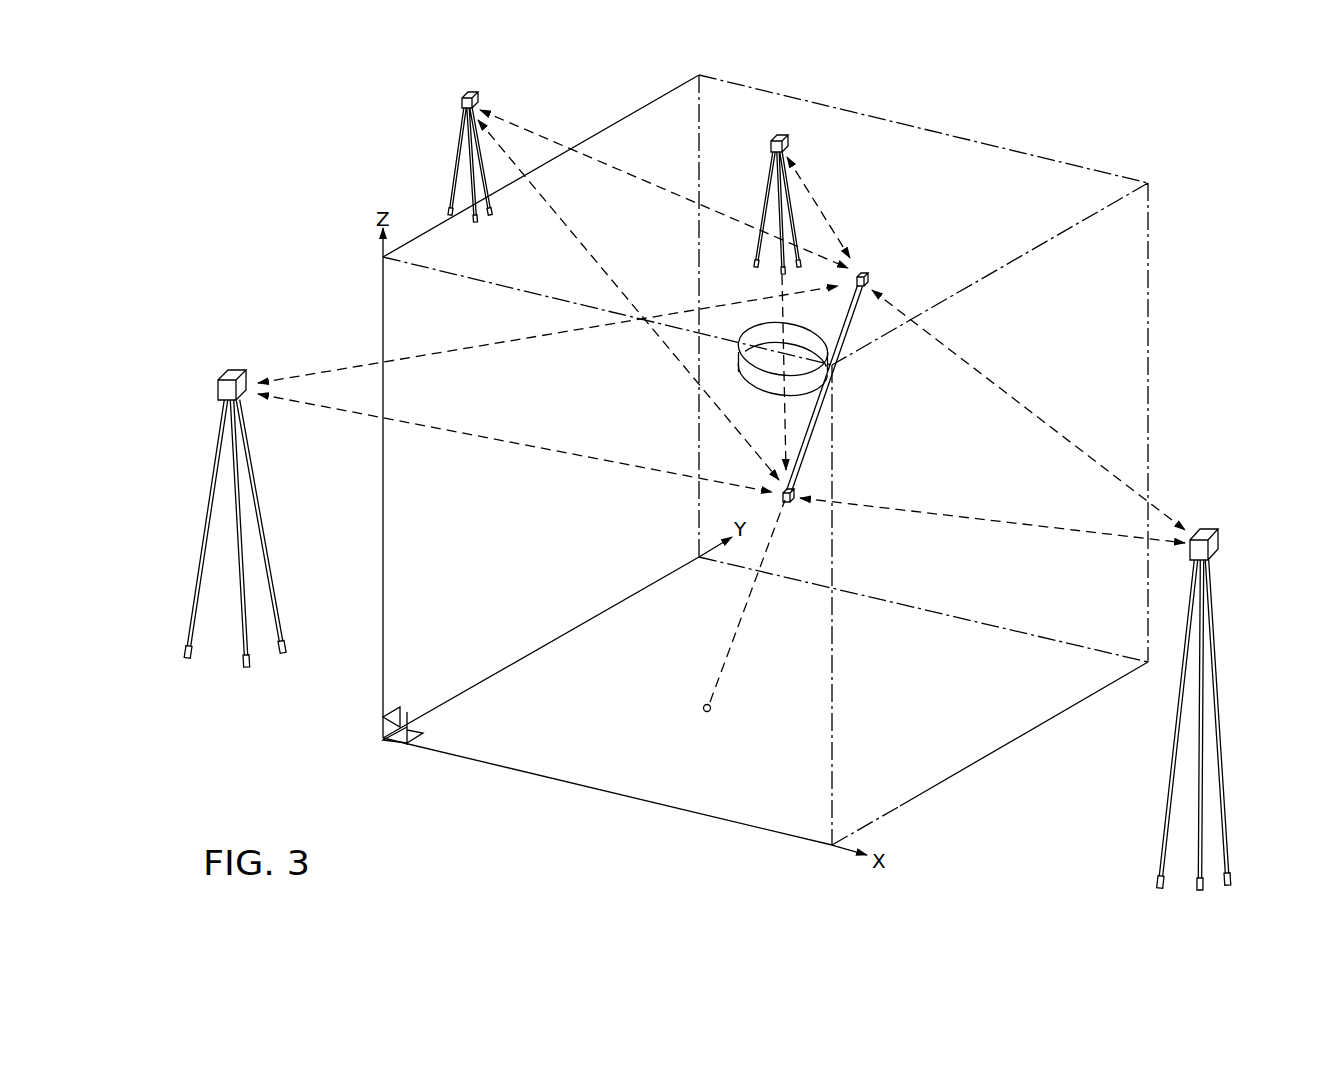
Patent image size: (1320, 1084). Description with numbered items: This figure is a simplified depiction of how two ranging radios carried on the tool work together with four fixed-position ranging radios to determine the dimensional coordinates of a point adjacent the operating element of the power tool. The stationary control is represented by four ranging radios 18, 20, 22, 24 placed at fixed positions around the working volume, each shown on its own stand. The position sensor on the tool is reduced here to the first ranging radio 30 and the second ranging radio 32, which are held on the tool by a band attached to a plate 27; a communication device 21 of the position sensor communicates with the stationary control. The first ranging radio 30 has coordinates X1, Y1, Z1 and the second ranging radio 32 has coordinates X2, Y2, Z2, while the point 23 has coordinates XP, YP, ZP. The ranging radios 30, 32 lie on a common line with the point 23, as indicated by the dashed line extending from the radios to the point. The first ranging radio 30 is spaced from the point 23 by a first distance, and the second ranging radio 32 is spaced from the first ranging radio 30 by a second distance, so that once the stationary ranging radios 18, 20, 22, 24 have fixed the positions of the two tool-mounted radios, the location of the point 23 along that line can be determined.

The ranging radio 18 is at (218, 386).
The ranging radio 20 is at (461, 102).
The ranging radio 22 is at (784, 146).
The ranging radio 24 is at (1219, 545).
The communication device 21 is at (769, 382).
The point 23 is at (715, 740).
The plate 27 is at (810, 426).
The first ranging radio 30 is at (790, 504).
The second ranging radio 32 is at (869, 277).